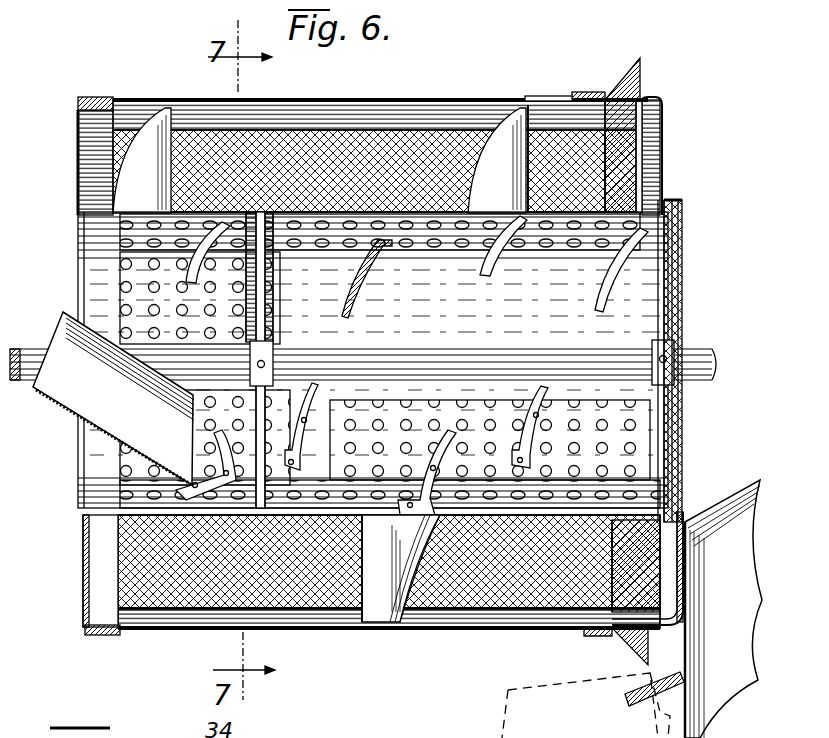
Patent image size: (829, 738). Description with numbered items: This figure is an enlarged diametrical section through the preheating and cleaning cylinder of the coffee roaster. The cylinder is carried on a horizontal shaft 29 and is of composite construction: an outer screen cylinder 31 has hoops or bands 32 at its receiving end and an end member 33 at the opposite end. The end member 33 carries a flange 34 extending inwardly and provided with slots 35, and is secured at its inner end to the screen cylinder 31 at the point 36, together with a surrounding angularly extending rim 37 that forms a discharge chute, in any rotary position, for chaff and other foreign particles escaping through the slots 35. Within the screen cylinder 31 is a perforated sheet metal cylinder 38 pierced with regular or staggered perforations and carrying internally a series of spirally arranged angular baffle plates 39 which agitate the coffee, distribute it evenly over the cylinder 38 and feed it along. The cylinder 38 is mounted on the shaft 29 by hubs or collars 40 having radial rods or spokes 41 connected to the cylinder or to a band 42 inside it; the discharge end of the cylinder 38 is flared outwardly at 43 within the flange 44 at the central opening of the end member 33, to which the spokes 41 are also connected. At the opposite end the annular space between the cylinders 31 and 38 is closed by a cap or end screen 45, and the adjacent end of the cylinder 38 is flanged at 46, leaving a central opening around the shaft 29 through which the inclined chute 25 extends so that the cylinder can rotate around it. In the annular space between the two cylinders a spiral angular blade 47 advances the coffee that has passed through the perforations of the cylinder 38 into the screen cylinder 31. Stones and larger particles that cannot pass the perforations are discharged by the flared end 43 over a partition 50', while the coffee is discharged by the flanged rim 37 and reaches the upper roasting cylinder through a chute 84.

The chute 25 is at (88, 395).
The shaft 29 is at (495, 370).
The outer screen cylinder 31 is at (412, 100).
The hoops or bands 32 is at (78, 110).
The end member 33 is at (670, 130).
The flange 34 is at (572, 96).
The slots 35 is at (648, 122).
The securing point 36 is at (525, 98).
The angularly extending rim 37 is at (640, 100).
The perforated sheet metal cylinder 38 is at (360, 340).
The angular baffle plates 39 is at (366, 290).
The hubs or collars 40 is at (272, 382).
The radial rods or spokes 41 is at (660, 290).
The band 42 is at (272, 322).
The flared discharge end 43 is at (682, 200).
The flange 44 is at (664, 150).
The cap or end screen 45 is at (78, 158).
The flange 46 is at (78, 250).
The spiral angular blade 47 is at (378, 582).
The chute 84 is at (625, 690).
The partition 50' is at (727, 609).